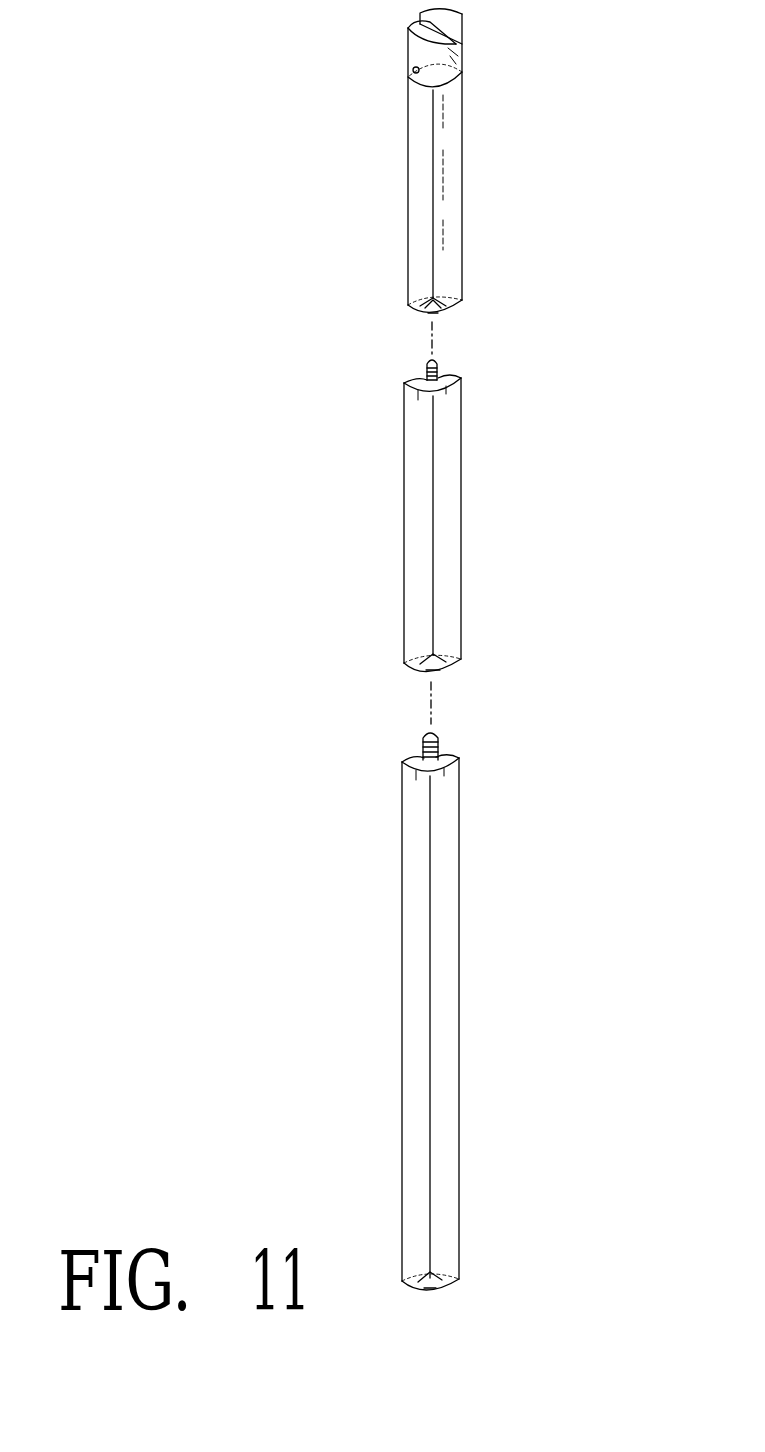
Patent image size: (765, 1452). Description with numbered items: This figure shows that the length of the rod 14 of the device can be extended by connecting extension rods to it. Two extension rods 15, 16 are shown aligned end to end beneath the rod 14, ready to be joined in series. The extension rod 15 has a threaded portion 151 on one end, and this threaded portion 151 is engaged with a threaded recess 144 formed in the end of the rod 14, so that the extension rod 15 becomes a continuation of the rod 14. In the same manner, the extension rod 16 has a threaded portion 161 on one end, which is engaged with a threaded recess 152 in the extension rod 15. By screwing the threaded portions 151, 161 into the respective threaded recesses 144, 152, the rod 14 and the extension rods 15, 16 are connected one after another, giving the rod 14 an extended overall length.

The rod 14 is at (445, 177).
The threaded recess 144 is at (440, 297).
The extension rod 15 is at (420, 503).
The threaded portion 151 is at (440, 370).
The threaded recess 152 is at (436, 656).
The extension rod 16 is at (447, 937).
The threaded portion 161 is at (440, 742).